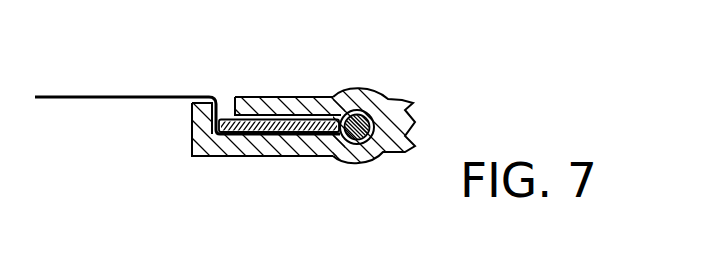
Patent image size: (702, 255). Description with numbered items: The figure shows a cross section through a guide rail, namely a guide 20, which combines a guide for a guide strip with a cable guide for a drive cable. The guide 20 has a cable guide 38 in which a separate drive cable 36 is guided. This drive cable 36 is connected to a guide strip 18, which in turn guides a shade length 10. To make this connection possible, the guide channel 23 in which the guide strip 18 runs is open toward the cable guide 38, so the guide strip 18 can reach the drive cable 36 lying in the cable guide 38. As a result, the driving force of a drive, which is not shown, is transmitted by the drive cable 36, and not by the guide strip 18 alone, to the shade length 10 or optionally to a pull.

The shade length 10 is at (103, 95).
The guide 20 is at (283, 97).
The guide channel 23 is at (222, 136).
The guide strip 18 is at (282, 128).
The drive cable 36 is at (363, 113).
The cable guide 38 is at (392, 151).